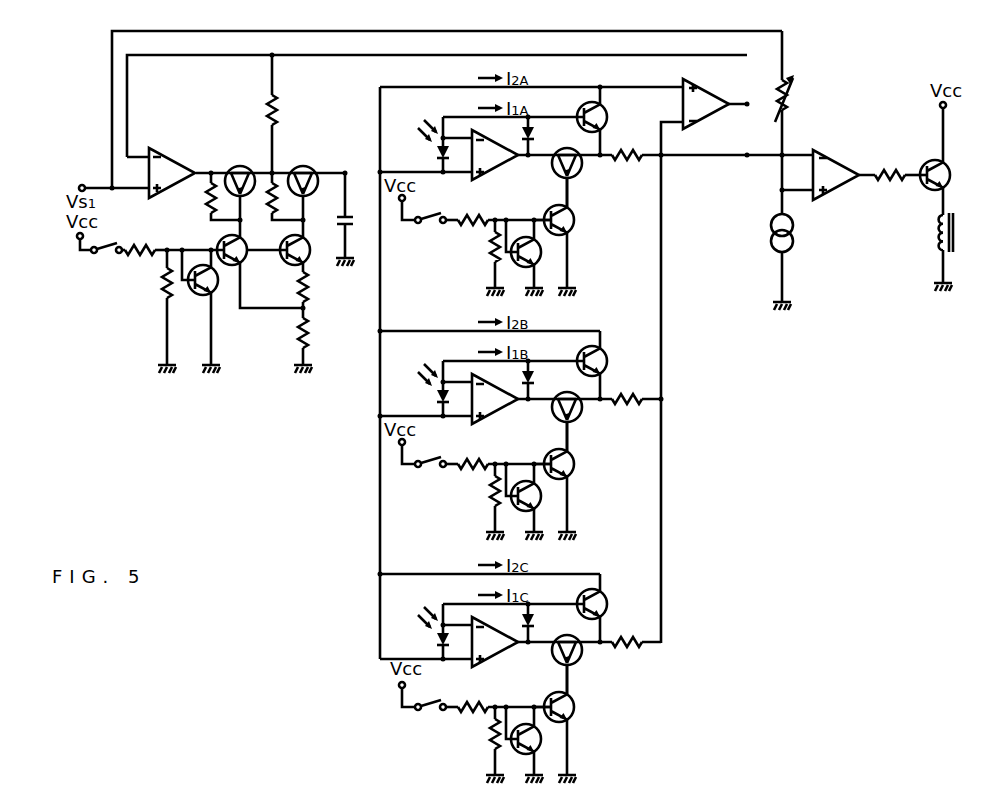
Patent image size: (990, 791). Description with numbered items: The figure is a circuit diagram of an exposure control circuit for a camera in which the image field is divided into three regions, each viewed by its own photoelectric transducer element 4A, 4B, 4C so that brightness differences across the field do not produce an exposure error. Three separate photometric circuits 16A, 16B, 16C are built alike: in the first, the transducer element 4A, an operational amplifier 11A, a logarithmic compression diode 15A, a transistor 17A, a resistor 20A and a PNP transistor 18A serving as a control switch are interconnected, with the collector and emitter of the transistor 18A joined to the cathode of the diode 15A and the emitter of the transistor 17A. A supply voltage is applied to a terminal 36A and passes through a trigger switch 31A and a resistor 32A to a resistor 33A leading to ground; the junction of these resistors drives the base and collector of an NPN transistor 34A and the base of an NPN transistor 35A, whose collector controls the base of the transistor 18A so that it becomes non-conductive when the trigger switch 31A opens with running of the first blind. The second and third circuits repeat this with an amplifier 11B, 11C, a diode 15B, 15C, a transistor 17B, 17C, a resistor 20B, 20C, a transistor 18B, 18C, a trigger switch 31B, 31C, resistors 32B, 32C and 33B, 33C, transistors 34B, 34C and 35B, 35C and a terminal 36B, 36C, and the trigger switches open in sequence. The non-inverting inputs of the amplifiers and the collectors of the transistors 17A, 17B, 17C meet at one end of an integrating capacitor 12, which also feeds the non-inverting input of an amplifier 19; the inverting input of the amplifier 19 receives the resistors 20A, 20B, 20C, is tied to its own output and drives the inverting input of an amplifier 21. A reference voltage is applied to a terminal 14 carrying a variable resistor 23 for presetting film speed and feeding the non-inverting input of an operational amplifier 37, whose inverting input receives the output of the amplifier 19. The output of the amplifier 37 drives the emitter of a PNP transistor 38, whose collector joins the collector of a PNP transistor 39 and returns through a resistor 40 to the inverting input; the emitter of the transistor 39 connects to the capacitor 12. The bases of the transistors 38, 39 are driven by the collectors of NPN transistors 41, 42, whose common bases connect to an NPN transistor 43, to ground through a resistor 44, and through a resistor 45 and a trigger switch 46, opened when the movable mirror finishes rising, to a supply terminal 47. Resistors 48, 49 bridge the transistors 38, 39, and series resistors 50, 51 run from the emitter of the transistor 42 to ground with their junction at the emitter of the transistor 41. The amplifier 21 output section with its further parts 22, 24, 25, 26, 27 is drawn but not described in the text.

The integrating capacitor 12 is at (352, 218).
The terminal 14 is at (107, 177).
The operational amplifier 37 is at (180, 153).
The PNP transistor 38 is at (238, 162).
The PNP transistor 39 is at (311, 162).
The resistor 40 is at (277, 110).
The NPN transistor 41 is at (226, 240).
The NPN transistor 42 is at (290, 240).
The NPN transistor 43 is at (199, 292).
The resistor 44 is at (162, 294).
The resistor 45 is at (144, 257).
The trigger switch 46 is at (118, 246).
The terminal 47 is at (77, 240).
The resistor 48 is at (204, 203).
The resistor 49 is at (277, 212).
The resistor 50 is at (308, 290).
The resistor 51 is at (308, 343).
The photoelectric transducer element 4A is at (433, 149).
The operational amplifier 11A is at (454, 147).
The logarithmic compression diode 15A is at (536, 132).
The photometric circuit 16A is at (554, 83).
The transistor 17A is at (604, 111).
The PNP transistor 18A is at (579, 177).
The resistor 20A is at (634, 143).
The trigger switch 31A is at (432, 231).
The resistor 32A is at (476, 210).
The resistor 33A is at (490, 248).
The NPN transistor 34A is at (542, 261).
The NPN transistor 35A is at (574, 233).
The terminal 36A is at (405, 200).
The photoelectric transducer element 4B is at (432, 390).
The operational amplifier 11B is at (454, 391).
The logarithmic compression diode 15B is at (550, 380).
The photometric circuit 16B is at (493, 319).
The transistor 17B is at (586, 365).
The transistor 18B is at (587, 421).
The resistor 20B is at (633, 387).
The trigger switch 31B is at (432, 475).
The resistor 32B is at (504, 451).
The resistor 33B is at (477, 502).
The transistor 34B is at (560, 502).
The transistor 35B is at (574, 481).
The terminal 36B is at (423, 449).
The photoelectric transducer element 4C is at (432, 633).
The operational amplifier 11C is at (454, 634).
The logarithmic compression diode 15C is at (550, 623).
The photometric circuit 16C is at (493, 562).
The transistor 17C is at (586, 608).
The transistor 18C is at (587, 664).
The resistor 20C is at (647, 657).
The trigger switch 31C is at (434, 718).
The resistor 32C is at (504, 694).
The resistor 33C is at (477, 745).
The transistor 34C is at (560, 745).
The transistor 35C is at (574, 724).
The terminal 36C is at (381, 692).
The amplifier 19 is at (716, 103).
The amplifier 21 is at (843, 173).
The current source 22 is at (793, 238).
The variable resistor 23 is at (790, 108).
The transistor 24 is at (948, 175).
The supply terminal 25 is at (947, 108).
The inductor 26 is at (956, 233).
The resistor 27 is at (891, 185).